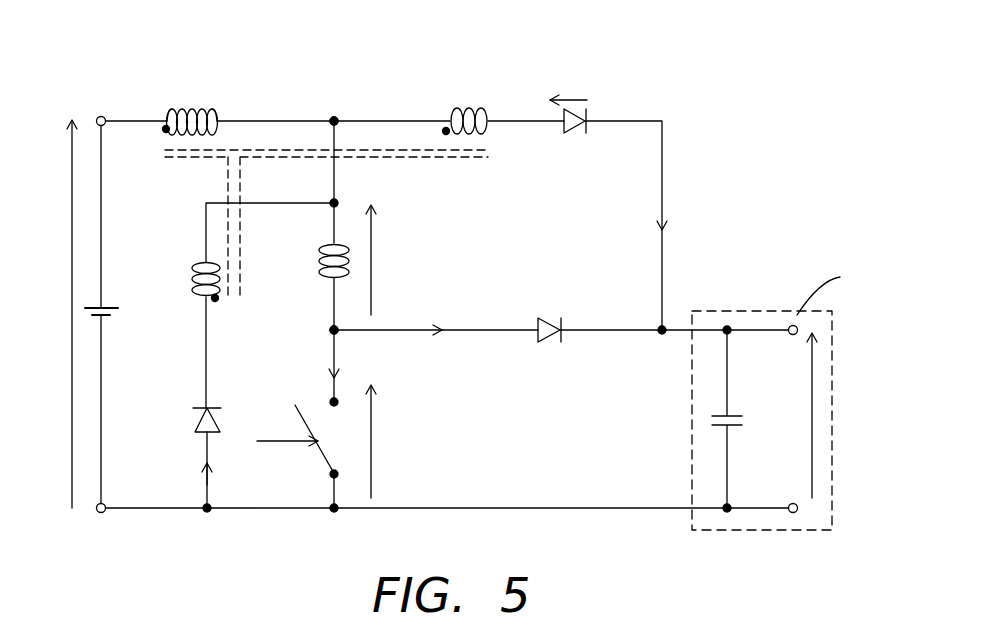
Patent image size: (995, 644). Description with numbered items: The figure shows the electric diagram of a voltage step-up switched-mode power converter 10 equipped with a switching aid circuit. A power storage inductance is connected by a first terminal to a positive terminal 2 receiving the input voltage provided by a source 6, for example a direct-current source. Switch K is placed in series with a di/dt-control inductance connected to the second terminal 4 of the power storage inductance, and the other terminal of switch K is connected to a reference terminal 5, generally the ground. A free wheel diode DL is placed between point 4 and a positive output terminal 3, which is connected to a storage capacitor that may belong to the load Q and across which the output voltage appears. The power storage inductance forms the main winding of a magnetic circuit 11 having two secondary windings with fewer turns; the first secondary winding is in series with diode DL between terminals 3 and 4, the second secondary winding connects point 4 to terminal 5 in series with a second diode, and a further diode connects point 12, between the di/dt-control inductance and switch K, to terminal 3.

The power converter 10 is at (157, 40).
The positive terminal 2 is at (98, 118).
The reference terminal 5 is at (105, 513).
The positive output terminal 3 is at (790, 324).
The second terminal 4 is at (337, 118).
The point 12 is at (330, 328).
The source 6 is at (112, 310).
The magnetic circuit 11 is at (258, 148).